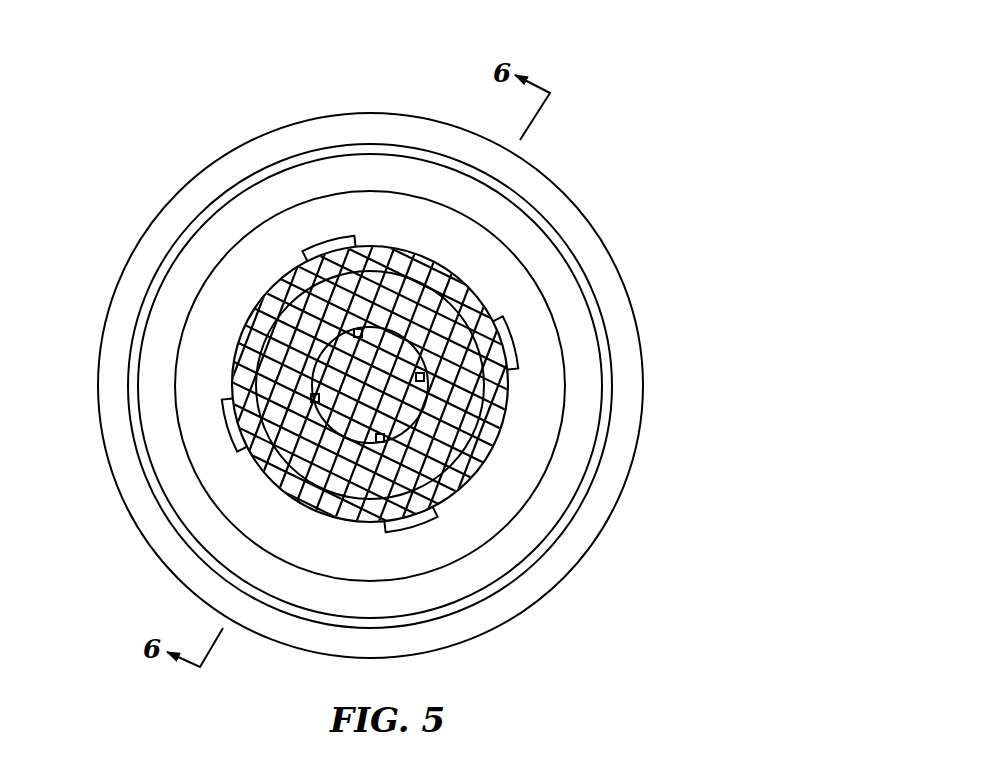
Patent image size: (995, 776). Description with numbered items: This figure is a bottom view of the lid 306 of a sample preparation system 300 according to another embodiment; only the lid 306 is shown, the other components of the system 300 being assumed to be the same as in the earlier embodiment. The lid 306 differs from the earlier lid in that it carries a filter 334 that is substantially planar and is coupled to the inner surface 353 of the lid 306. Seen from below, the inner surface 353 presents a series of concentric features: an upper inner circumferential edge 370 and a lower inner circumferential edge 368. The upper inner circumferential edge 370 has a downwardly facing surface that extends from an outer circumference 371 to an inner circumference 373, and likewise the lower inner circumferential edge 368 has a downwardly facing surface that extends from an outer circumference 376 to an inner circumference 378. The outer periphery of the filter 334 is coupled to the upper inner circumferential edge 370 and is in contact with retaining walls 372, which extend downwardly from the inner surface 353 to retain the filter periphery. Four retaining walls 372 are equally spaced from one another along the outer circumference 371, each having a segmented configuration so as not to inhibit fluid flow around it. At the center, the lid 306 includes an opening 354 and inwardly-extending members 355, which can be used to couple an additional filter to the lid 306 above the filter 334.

The sample preparation system 300 is at (650, 107).
The lid 306 is at (605, 188).
The filter 334 is at (335, 374).
The inner surface 353 is at (369, 377).
The opening 354 is at (300, 295).
The inwardly-extending members 355 is at (385, 442).
The lower inner circumferential edge 368 is at (429, 386).
The upper inner circumferential edge 370 is at (272, 317).
The outer circumference 371 is at (262, 350).
The retaining walls 372 is at (517, 342).
The inner circumference 373 is at (483, 302).
The outer circumference 376 is at (601, 443).
The inner circumference 378 is at (485, 547).